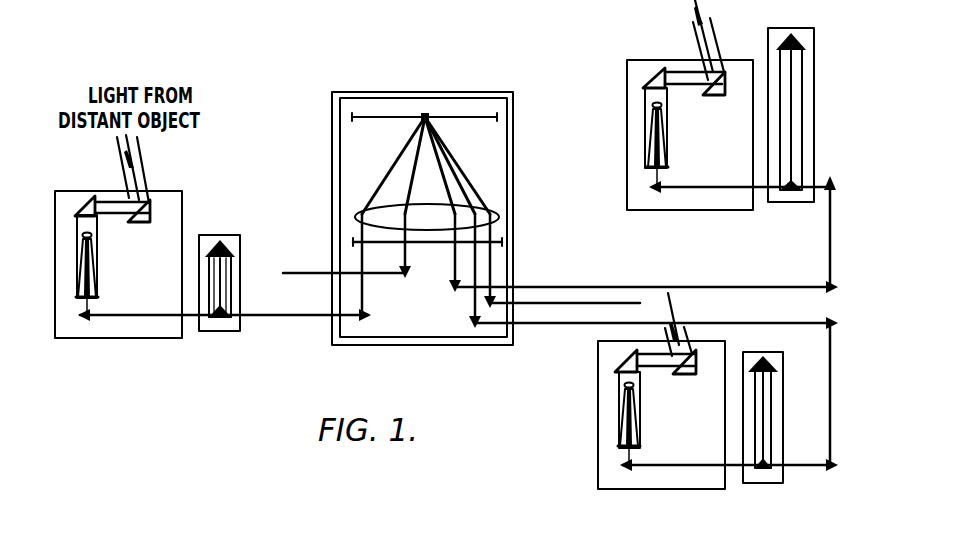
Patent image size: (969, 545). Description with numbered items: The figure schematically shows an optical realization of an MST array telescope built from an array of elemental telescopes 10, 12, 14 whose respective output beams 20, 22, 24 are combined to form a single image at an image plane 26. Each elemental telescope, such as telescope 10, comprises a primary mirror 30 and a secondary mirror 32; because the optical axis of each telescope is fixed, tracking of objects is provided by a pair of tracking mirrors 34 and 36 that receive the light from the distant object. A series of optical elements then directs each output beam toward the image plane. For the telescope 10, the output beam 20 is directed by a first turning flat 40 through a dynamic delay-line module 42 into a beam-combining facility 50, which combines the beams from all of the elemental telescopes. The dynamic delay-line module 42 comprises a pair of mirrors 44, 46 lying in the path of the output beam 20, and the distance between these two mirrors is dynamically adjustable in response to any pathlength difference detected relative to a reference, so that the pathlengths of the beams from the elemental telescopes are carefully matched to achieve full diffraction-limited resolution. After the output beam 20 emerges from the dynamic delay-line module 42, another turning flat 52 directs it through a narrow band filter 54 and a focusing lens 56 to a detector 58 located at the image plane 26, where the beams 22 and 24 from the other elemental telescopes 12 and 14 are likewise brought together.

The elemental telescope 10 is at (68, 258).
The elemental telescope 12 is at (610, 419).
The elemental telescope 14 is at (640, 127).
The output beam 20 is at (160, 338).
The output beam 22 is at (700, 470).
The output beam 24 is at (718, 190).
The image plane 26 is at (485, 108).
The primary mirror 30 is at (78, 290).
The secondary mirror 32 is at (80, 224).
The tracking mirror 34 is at (150, 206).
The tracking mirror 36 is at (82, 206).
The first turning flat 40 is at (84, 320).
The dynamic delay-line module 42 is at (241, 292).
The mirror 44 is at (225, 333).
The mirror 46 is at (241, 240).
The beam-combining facility 50 is at (493, 346).
The turning flat 52 is at (370, 320).
The narrow band filter 54 is at (353, 242).
The focusing lens 56 is at (356, 214).
The detector 58 is at (425, 113).